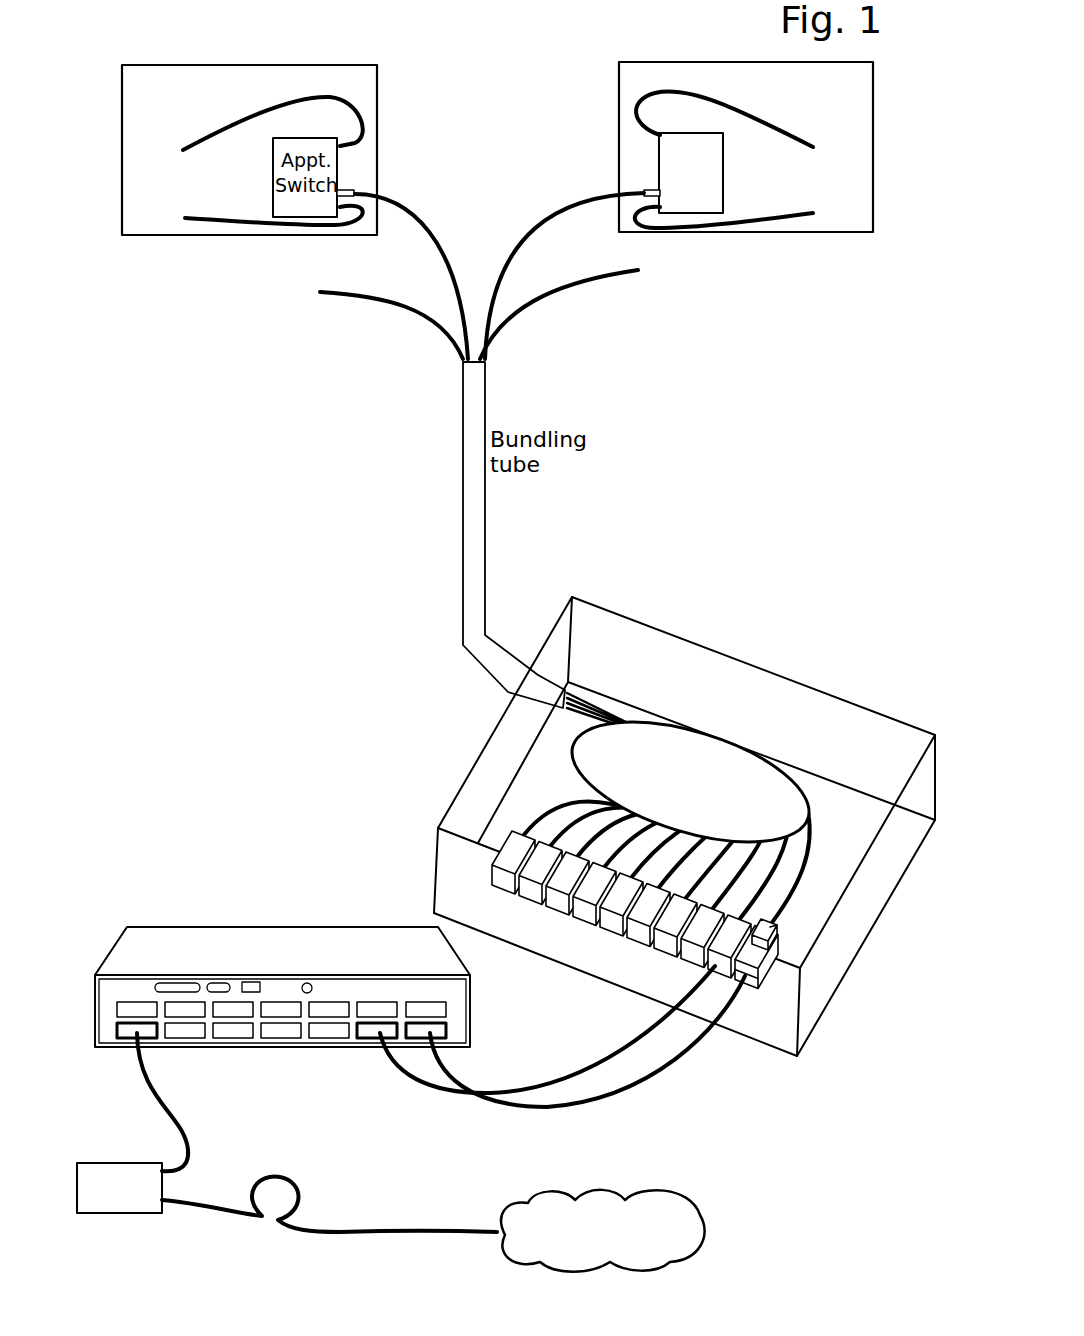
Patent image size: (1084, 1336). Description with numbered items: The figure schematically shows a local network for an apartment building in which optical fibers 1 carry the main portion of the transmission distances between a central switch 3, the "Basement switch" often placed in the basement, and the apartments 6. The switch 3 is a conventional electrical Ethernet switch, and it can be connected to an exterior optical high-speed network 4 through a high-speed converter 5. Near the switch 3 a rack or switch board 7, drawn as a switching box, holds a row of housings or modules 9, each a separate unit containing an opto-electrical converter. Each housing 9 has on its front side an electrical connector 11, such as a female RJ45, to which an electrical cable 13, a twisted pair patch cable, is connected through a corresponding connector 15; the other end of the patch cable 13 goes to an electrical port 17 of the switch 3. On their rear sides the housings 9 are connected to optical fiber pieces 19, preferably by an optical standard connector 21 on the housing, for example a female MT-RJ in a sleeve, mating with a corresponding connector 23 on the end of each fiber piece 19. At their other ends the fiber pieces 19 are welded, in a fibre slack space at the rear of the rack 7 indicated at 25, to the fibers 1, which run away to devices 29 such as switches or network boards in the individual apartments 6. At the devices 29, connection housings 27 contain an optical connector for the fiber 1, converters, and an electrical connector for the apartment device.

The optical fibers 1 is at (530, 226).
The central switch 3 is at (282, 936).
The exterior optical high-speed network 4 is at (702, 1230).
The high-speed converter 5 is at (120, 1213).
The apartments 6 is at (815, 233).
The rack or switch board 7 is at (456, 800).
The housings or modules 9 is at (762, 975).
The electrical connector 11 is at (760, 982).
The electrical cable 13 is at (656, 1074).
The connector 15 is at (720, 970).
The electrical port 17 is at (440, 1010).
The optical fiber pieces 19 is at (803, 866).
The optical standard connector 21 is at (775, 944).
The connector 23 is at (772, 934).
The welding space 25 is at (790, 759).
The connection housings 27 is at (650, 190).
The devices 29 is at (723, 160).